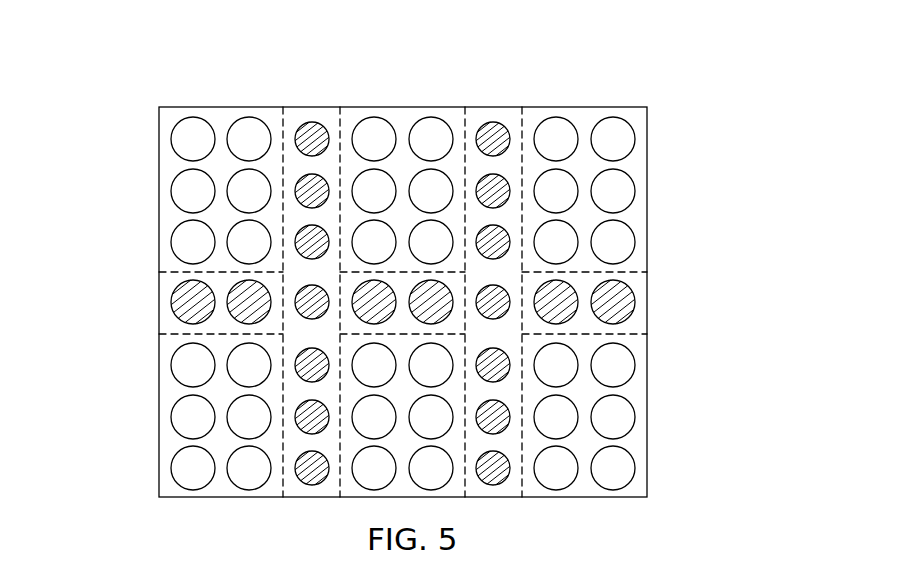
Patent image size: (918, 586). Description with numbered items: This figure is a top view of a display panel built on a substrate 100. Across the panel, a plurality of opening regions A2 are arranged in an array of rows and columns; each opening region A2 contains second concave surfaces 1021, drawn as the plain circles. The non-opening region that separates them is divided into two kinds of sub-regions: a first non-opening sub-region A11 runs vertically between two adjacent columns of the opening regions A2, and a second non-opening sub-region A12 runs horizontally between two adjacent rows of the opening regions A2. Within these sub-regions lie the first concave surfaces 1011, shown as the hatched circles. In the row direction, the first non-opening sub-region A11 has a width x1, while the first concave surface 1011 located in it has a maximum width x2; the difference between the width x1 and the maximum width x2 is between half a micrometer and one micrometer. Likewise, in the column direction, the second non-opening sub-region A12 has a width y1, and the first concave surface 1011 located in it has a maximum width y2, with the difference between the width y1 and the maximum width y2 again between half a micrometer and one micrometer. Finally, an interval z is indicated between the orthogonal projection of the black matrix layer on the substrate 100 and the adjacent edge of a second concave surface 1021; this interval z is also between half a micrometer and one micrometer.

The substrate 100 is at (648, 245).
The second concave surface 1021 is at (171, 138).
The first concave surface 1011 is at (636, 302).
The first non-opening sub-region A11 is at (288, 130).
The second non-opening sub-region A12 is at (170, 325).
The opening region A2 is at (584, 125).
The width of the first non-opening sub-region x1 is at (339, 160).
The maximum width of the first concave surface x2 is at (283, 191).
The width of the second non-opening sub-region y1 is at (218, 273).
The maximum width of the first concave surface y2 is at (250, 265).
The interval z is at (556, 357).